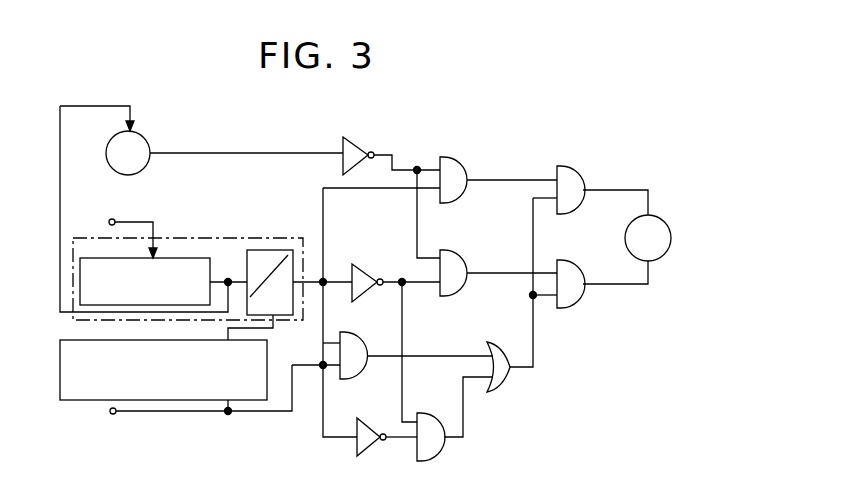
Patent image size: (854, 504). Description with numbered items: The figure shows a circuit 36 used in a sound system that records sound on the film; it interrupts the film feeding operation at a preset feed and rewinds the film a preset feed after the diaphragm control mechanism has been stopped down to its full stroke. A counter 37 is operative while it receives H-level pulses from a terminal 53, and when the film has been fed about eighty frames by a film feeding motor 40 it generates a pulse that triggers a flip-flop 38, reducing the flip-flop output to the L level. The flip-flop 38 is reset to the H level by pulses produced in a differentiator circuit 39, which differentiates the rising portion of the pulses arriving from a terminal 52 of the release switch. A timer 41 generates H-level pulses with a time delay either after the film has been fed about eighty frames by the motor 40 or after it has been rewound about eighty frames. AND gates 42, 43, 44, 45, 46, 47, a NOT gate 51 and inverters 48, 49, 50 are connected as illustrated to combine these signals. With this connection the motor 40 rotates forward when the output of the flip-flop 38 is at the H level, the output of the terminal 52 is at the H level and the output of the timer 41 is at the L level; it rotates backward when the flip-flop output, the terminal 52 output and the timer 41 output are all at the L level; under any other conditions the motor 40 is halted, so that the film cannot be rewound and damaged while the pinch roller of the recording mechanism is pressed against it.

The circuit 36 is at (453, 134).
The counter 37 is at (200, 257).
The flip-flop 38 is at (270, 249).
The differentiator circuit 39 is at (186, 394).
The film feeding motor 40 is at (668, 228).
The timer 41 is at (150, 142).
The AND gate 42 is at (463, 169).
The AND gate 43 is at (462, 264).
The AND gate 44 is at (355, 348).
The AND gate 45 is at (430, 412).
The AND gate 46 is at (575, 172).
The AND gate 47 is at (568, 265).
The inverter 48 is at (355, 146).
The inverter 49 is at (357, 446).
The inverter 50 is at (363, 266).
The NOT gate 51 is at (509, 379).
The terminal 52 is at (113, 415).
The terminal 53 is at (111, 219).